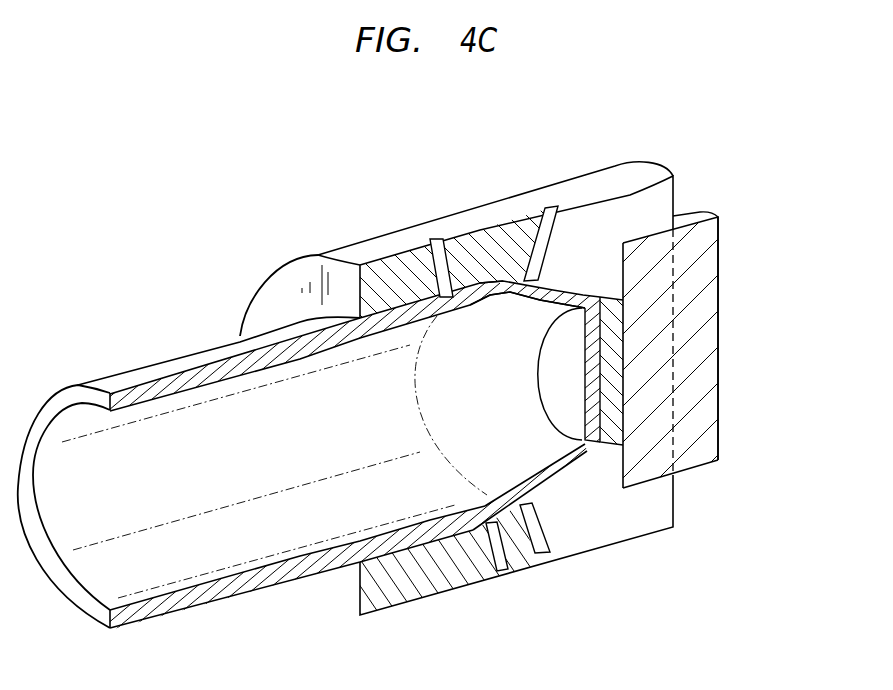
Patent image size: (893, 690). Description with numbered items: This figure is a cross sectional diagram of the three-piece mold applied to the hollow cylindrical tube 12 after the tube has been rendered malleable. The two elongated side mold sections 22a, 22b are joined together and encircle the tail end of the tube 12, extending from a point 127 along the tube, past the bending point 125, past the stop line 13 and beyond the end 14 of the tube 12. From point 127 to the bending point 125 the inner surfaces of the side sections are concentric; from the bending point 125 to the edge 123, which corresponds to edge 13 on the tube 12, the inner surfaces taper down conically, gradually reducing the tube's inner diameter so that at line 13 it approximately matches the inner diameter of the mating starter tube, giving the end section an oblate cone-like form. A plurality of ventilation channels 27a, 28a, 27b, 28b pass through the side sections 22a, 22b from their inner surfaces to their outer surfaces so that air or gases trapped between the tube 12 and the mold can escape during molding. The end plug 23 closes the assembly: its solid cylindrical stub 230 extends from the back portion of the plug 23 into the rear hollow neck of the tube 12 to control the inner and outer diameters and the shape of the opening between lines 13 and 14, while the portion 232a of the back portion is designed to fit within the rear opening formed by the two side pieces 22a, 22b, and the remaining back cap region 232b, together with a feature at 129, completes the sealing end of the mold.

The hollow cylindrical tube 12 is at (131, 271).
The point 127 is at (217, 382).
The bending point 125 is at (502, 302).
The inner edge 129 is at (541, 304).
The edge 123 is at (541, 399).
The side mold section 22a is at (623, 182).
The side mold section 22b is at (487, 346).
The ventilation channel 27a is at (435, 239).
The ventilation channel 28a is at (551, 206).
The ventilation channel 27b is at (509, 571).
The ventilation channel 28b is at (550, 553).
The end plug 23 is at (802, 341).
The portion of back portion 232a is at (653, 257).
The second plate portion 232b is at (710, 272).
The solid cylindrical stub 230 is at (655, 465).
The stop line 13 is at (583, 443).
The end of tube 14 is at (603, 445).